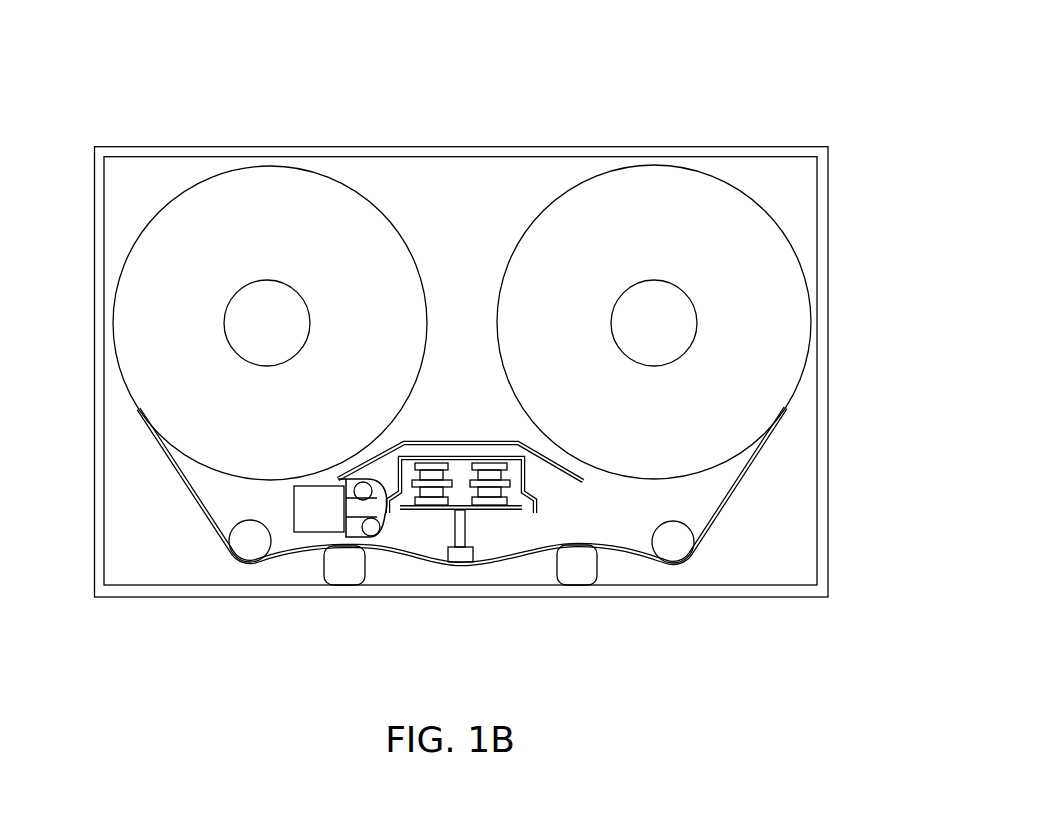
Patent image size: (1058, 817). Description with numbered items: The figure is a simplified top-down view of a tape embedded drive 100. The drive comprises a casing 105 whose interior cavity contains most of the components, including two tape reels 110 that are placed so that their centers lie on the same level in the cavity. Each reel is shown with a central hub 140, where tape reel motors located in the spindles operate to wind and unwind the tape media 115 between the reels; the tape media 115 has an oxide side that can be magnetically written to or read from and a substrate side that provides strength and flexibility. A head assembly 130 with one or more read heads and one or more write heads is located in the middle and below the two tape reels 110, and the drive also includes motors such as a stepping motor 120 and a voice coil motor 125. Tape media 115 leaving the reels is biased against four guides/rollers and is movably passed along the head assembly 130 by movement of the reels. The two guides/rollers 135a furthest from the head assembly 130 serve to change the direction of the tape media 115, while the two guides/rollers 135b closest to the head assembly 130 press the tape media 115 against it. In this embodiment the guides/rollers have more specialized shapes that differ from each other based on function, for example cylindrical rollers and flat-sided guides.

The tape drive system 100 is at (428, 330).
The casing 105 is at (492, 147).
The tape reel 110 is at (252, 168).
The tape media 115 is at (197, 505).
The stepping motor 120 is at (305, 532).
The voice coil motor 125 is at (435, 512).
The head assembly 130 is at (460, 563).
The guides/rollers 135a is at (250, 543).
The guides/rollers 135b is at (345, 572).
The reel hub 140 is at (298, 293).